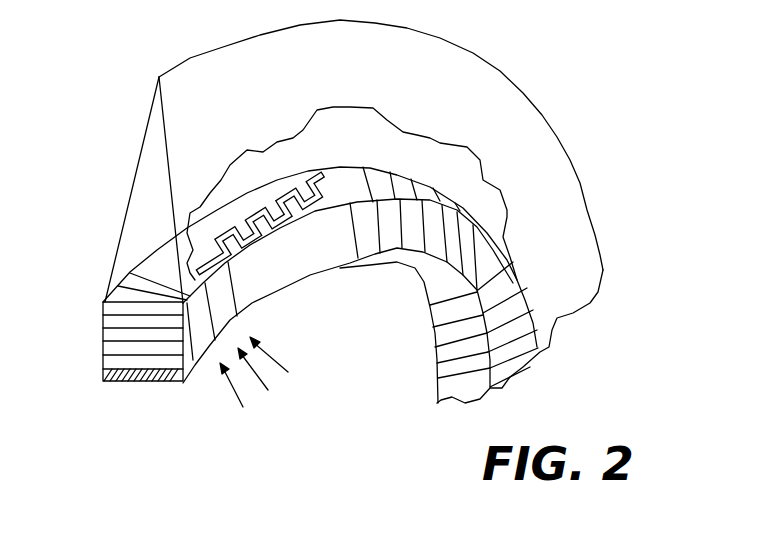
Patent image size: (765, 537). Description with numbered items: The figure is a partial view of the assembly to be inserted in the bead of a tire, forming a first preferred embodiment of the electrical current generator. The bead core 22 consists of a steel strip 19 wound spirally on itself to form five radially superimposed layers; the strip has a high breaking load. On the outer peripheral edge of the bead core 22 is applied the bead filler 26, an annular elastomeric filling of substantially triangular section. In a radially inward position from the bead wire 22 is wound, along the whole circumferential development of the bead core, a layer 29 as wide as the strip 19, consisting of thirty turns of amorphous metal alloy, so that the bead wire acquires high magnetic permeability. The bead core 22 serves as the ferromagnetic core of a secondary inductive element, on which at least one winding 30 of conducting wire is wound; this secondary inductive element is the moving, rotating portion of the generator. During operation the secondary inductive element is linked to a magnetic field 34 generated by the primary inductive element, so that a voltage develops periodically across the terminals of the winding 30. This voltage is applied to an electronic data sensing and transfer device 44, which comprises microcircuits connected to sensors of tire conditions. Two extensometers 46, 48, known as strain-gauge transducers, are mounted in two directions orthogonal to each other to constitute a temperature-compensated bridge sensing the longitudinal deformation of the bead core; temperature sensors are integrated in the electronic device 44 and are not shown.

The steel strip 19 is at (147, 362).
The bead core 22 is at (320, 277).
The bead filler 26 is at (332, 211).
The layer 29 is at (135, 409).
The winding 30 is at (262, 336).
The magnetic field 34 is at (377, 260).
The electronic data sensing and transfer device 44 is at (203, 169).
The extensometer 46 is at (441, 259).
The extensometer 48 is at (262, 202).